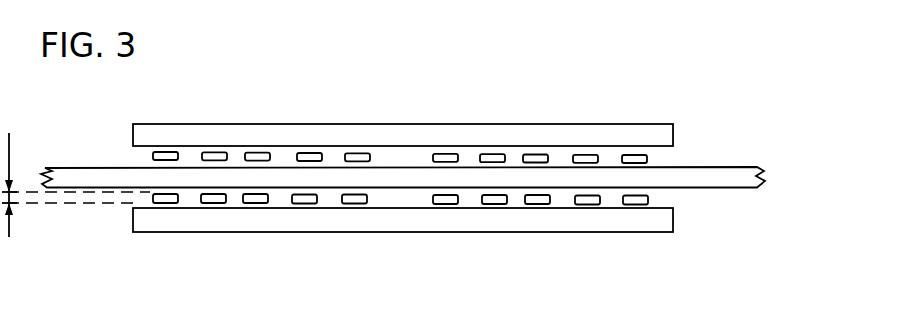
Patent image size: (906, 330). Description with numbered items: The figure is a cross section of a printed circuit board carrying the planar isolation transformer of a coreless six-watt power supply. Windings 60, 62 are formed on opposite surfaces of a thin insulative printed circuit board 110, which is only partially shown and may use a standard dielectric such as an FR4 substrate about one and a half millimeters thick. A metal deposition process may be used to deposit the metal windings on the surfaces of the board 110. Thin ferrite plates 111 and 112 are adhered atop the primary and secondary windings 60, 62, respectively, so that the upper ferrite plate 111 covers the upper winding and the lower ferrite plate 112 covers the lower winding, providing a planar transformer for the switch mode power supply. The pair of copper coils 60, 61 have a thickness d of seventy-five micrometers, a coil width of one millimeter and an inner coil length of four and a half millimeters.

The copper coil 61 is at (432, 115).
The ferrite plate 111 is at (627, 130).
The ferrite plate 112 is at (623, 223).
The winding 60 is at (650, 160).
The winding 62 is at (653, 198).
The printed circuit board 110 is at (740, 182).
The thickness d is at (76, 185).